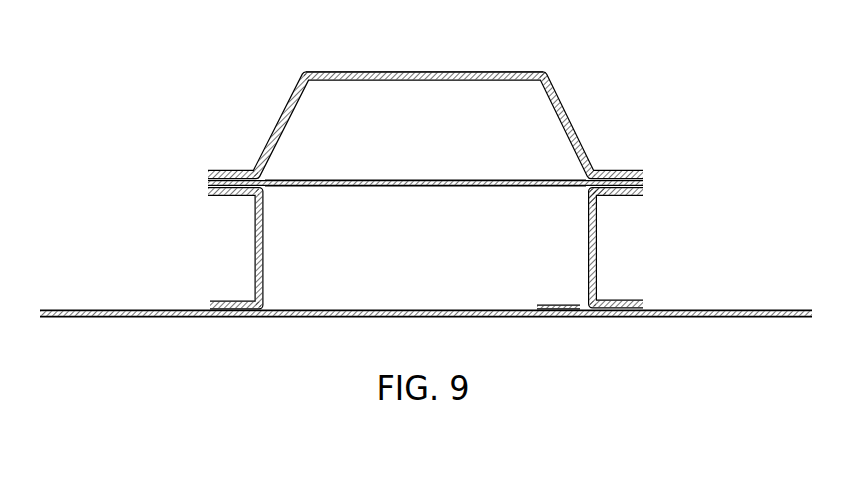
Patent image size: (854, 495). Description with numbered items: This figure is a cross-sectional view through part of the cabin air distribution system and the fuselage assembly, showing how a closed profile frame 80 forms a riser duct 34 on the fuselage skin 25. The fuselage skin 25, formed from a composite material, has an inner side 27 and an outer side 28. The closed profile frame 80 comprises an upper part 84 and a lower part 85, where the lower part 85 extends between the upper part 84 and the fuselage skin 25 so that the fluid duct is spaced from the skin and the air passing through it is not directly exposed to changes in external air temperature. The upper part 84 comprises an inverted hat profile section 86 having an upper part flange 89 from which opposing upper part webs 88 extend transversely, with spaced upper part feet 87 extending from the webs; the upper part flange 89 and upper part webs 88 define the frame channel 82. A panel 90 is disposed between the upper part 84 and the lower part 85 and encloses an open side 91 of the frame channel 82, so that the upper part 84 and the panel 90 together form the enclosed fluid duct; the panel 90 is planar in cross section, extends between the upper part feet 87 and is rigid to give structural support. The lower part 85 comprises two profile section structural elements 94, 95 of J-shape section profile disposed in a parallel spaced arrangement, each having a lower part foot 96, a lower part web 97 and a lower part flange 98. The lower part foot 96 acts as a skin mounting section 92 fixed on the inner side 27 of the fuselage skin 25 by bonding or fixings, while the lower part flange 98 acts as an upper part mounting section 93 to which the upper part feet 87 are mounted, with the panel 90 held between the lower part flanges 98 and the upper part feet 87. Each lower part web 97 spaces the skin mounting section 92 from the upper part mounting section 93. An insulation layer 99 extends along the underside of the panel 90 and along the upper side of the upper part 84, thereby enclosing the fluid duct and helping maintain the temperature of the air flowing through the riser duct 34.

The riser duct 34 is at (553, 61).
The closed profile frame 80 is at (646, 91).
The frame channel 82 is at (430, 108).
The upper part 84 is at (105, 128).
The lower part 85 is at (109, 196).
The inverted hat profile section 86 is at (480, 72).
The upper part feet 87 is at (247, 171).
The upper part webs 88 is at (284, 127).
The upper part flange 89 is at (333, 73).
The panel 90 is at (505, 182).
The open side 91 is at (380, 173).
The skin mounting section 92 is at (578, 312).
The upper part mounting section 93 is at (227, 195).
The profile section structural element 94 is at (205, 253).
The profile section structural element 95 is at (612, 279).
The lower part foot 96 is at (240, 318).
The lower part web 97 is at (260, 253).
The lower part flange 98 is at (612, 192).
The insulation layer 99 is at (303, 71).
The inner side 27 is at (733, 309).
The fuselage skin 25 is at (92, 318).
The outer side 28 is at (162, 318).